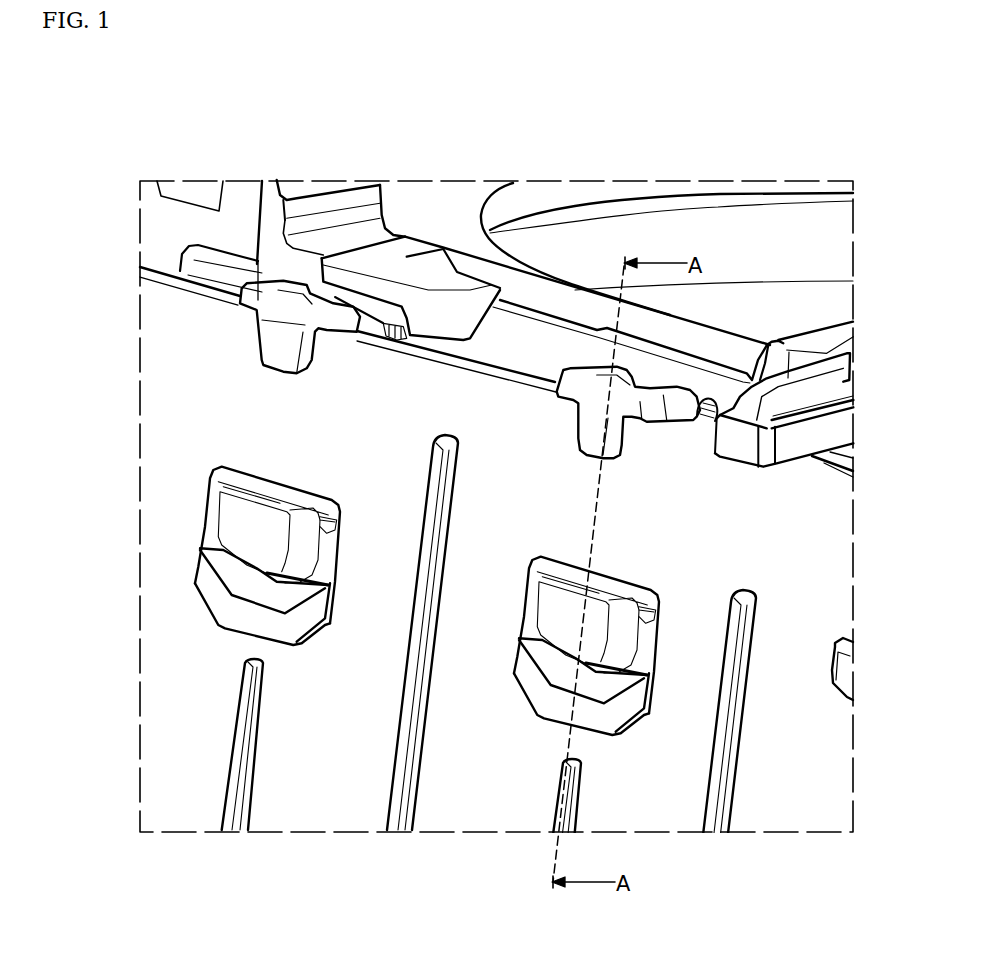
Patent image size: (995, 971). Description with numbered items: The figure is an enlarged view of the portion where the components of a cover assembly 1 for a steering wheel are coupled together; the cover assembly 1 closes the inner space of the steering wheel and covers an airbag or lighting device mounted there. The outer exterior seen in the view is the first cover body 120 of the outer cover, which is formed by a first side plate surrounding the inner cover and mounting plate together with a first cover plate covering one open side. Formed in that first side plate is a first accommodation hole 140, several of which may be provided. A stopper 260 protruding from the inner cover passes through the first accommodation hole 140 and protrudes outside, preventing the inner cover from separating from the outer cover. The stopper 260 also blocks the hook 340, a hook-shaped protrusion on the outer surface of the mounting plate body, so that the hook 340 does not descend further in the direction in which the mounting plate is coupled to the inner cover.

The cover assembly for a steering wheel 1 is at (158, 152).
The first cover body 120 is at (176, 352).
The first accommodation hole 140 is at (240, 470).
The hook 340 is at (254, 545).
The stopper 260 is at (232, 612).